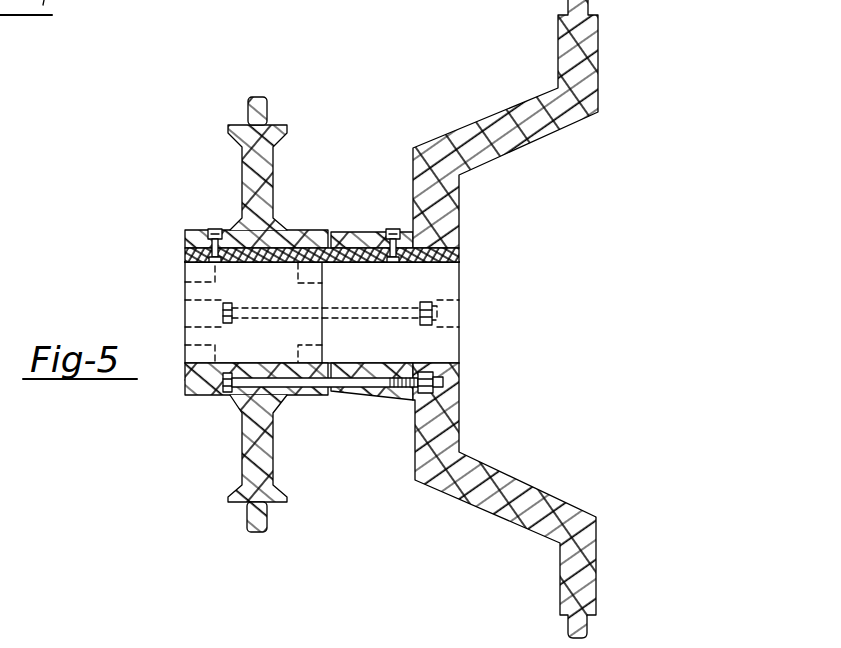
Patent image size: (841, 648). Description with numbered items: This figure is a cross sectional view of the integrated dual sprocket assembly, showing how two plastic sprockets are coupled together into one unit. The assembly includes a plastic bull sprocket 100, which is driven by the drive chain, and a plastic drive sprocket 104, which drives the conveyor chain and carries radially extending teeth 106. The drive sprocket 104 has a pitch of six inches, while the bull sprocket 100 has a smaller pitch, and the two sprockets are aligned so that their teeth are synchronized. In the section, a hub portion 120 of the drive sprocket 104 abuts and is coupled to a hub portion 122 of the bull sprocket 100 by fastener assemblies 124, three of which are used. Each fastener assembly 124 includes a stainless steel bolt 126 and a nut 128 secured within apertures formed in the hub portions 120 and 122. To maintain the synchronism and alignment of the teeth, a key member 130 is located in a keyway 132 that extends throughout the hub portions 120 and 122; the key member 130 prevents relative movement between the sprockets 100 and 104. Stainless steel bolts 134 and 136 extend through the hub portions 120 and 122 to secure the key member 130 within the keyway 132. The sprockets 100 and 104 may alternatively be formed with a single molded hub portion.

The bull sprocket 100 is at (577, 50).
The drive sprocket 104 is at (258, 168).
The teeth 106 is at (255, 112).
The hub portion 120 is at (282, 240).
The hub portion 122 is at (357, 243).
The fastener assembly 124 is at (452, 382).
The bolt 126 is at (344, 384).
The nut 128 is at (430, 378).
The key member 130 is at (435, 262).
The keyway 132 is at (163, 259).
The bolt 134 is at (215, 228).
The bolt 136 is at (393, 229).